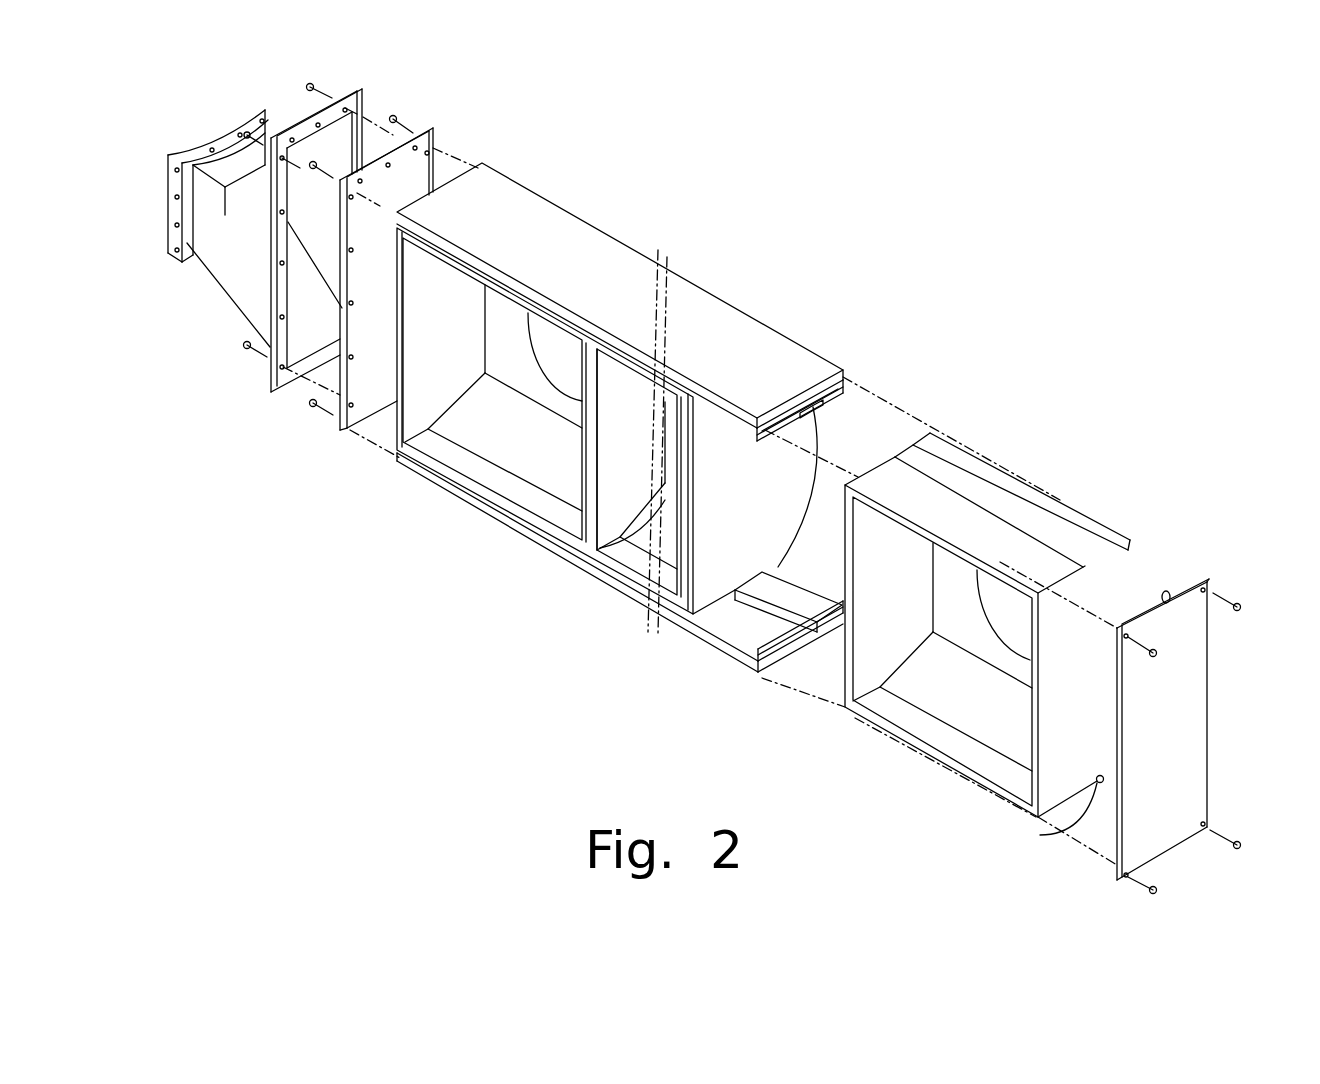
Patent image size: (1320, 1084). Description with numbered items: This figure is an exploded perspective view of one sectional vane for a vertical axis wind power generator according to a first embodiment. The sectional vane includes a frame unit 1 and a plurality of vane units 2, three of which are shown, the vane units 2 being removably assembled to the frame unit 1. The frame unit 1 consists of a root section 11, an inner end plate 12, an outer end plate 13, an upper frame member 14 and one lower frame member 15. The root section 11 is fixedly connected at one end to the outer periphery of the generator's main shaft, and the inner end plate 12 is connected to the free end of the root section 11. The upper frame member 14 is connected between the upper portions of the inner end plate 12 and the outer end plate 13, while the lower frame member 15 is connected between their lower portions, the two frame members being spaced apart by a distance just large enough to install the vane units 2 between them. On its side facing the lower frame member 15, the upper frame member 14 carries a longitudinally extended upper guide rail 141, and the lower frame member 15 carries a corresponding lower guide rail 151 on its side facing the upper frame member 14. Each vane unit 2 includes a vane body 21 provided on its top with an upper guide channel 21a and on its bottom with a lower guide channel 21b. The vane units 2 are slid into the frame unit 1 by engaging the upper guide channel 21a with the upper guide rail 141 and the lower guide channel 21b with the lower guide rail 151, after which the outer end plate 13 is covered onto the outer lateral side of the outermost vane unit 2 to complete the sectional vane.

The frame unit 1 is at (710, 280).
The vane unit 2 is at (478, 473).
The root section 11 is at (233, 242).
The inner end plate 12 is at (357, 378).
The outer end plate 13 is at (1187, 730).
The upper frame member 14 is at (733, 317).
The upper guide rail 141 is at (826, 407).
The lower frame member 15 is at (705, 628).
The lower guide rail 151 is at (775, 598).
The vane body 21 is at (1121, 679).
The upper guide channel 21a is at (1132, 590).
The lower guide channel 21b is at (1083, 790).